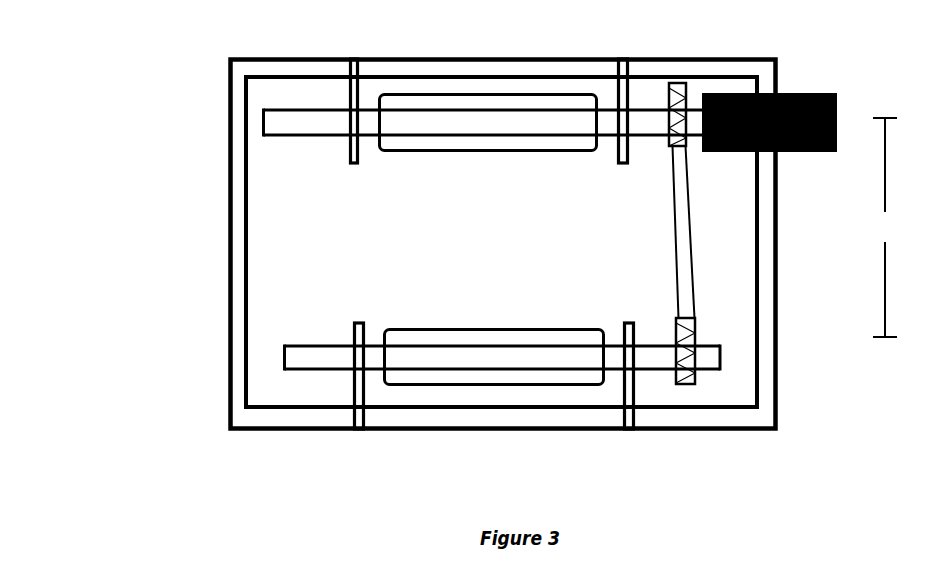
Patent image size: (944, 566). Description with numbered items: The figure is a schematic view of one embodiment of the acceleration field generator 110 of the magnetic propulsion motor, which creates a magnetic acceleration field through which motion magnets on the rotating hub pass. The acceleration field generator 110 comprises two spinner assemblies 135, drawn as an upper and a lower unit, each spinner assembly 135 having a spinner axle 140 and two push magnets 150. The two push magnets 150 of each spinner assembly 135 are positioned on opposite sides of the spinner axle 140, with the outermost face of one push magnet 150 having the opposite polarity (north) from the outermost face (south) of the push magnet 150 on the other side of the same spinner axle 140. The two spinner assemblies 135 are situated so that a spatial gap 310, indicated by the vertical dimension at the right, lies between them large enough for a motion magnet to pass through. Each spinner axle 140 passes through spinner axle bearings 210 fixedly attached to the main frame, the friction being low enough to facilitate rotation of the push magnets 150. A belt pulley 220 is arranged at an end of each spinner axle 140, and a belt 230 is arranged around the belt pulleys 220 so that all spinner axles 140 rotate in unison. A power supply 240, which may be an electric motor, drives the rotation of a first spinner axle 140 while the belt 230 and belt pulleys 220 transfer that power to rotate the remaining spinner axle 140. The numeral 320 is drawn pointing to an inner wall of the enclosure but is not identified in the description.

The acceleration field generator 110 is at (403, 224).
The spinner assembly 135 is at (375, 186).
The spinner axle 140 is at (327, 357).
The push magnet 150 is at (462, 102).
The spinner axle bearing 210 is at (345, 122).
The belt pulley 220 is at (673, 82).
The belt 230 is at (683, 240).
The power supply 240 is at (811, 92).
The spatial gap 310 is at (885, 227).
The inner wall 320 is at (562, 396).